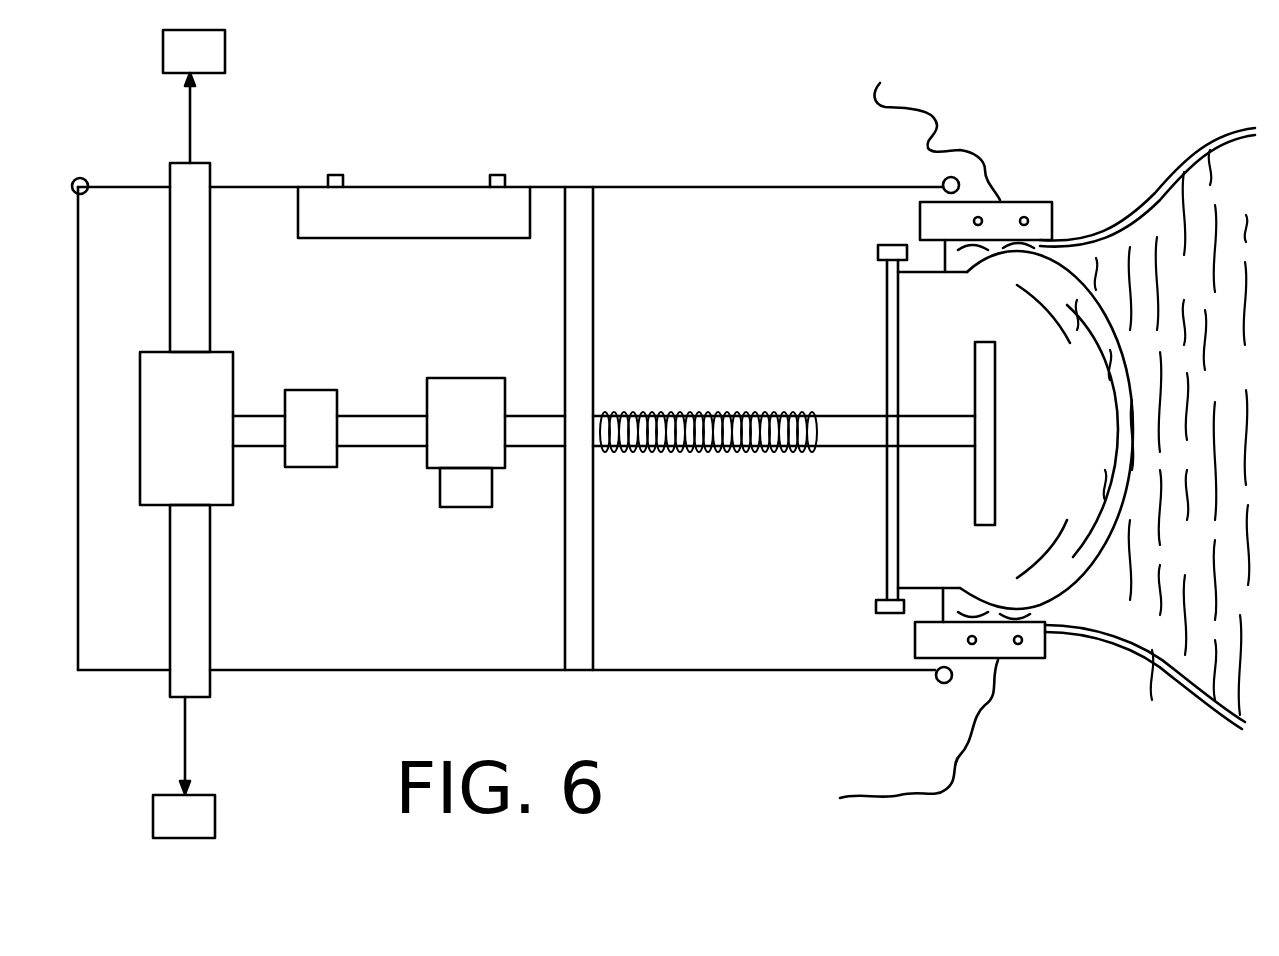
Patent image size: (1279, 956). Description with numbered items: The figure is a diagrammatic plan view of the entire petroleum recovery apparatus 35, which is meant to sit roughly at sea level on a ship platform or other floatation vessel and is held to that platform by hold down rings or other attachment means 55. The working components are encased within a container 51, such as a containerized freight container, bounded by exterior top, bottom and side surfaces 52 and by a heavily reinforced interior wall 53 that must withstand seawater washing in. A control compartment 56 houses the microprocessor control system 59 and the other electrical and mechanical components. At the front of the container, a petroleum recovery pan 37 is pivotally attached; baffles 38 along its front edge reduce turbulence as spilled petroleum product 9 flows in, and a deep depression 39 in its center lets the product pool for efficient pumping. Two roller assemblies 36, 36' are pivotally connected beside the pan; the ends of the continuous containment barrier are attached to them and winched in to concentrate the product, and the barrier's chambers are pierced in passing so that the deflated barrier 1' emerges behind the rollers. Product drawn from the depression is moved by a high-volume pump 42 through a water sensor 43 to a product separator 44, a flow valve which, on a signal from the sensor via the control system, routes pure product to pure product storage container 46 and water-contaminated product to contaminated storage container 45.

The deflated barrier 1' is at (893, 432).
The petroleum product 9 is at (1200, 235).
The recovery apparatus 35 is at (660, 670).
The roller assembly 36 is at (1035, 666).
The roller assembly 36' is at (1048, 186).
The petroleum recovery pan 37 is at (1063, 468).
The baffles 38 is at (1115, 420).
The deep depression 39 is at (1092, 452).
The high-volume pump 42 is at (452, 440).
The water sensor 43 is at (308, 442).
The product separator 44 is at (200, 385).
The contaminated storage container 45 is at (194, 96).
The pure product storage container 46 is at (184, 767).
The container 51 is at (697, 188).
The exterior top, bottom and side surfaces 52 is at (100, 670).
The interior wall 53 is at (585, 305).
The hold down rings 55 is at (92, 182).
The control compartment 56 is at (463, 188).
The microprocessor control system 59 is at (390, 205).